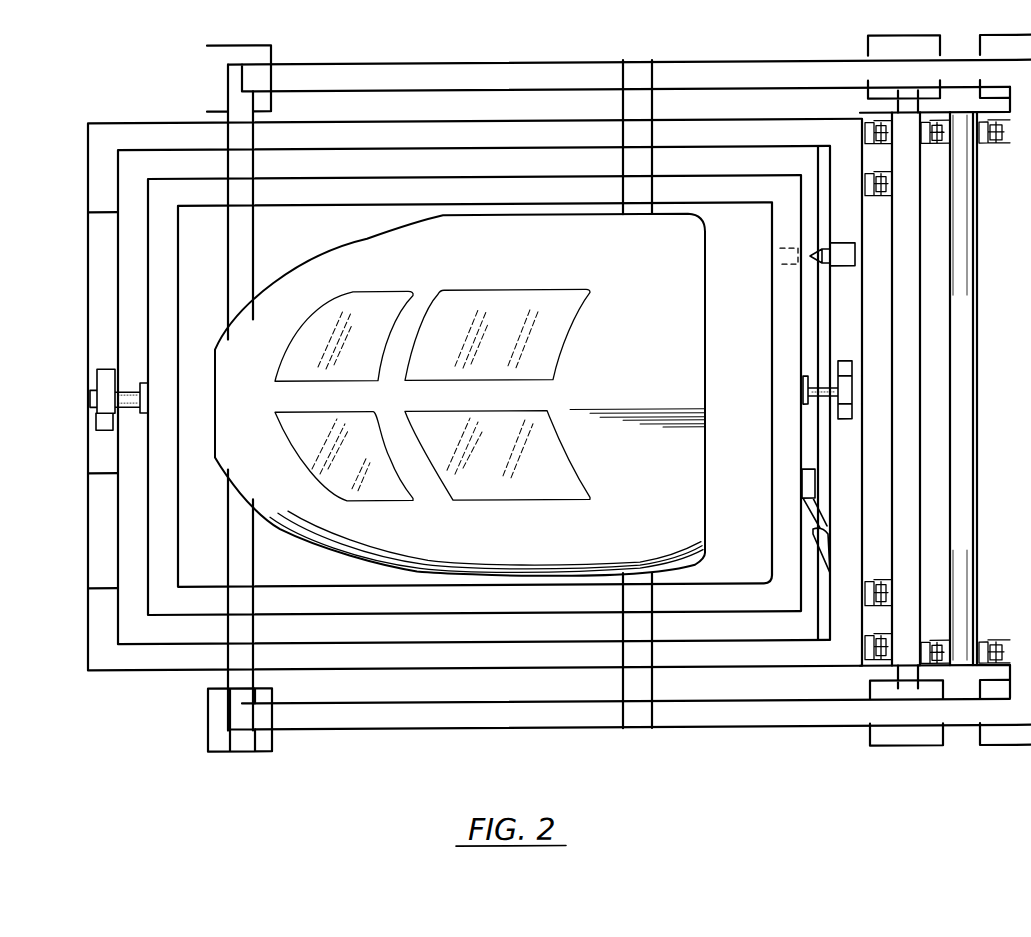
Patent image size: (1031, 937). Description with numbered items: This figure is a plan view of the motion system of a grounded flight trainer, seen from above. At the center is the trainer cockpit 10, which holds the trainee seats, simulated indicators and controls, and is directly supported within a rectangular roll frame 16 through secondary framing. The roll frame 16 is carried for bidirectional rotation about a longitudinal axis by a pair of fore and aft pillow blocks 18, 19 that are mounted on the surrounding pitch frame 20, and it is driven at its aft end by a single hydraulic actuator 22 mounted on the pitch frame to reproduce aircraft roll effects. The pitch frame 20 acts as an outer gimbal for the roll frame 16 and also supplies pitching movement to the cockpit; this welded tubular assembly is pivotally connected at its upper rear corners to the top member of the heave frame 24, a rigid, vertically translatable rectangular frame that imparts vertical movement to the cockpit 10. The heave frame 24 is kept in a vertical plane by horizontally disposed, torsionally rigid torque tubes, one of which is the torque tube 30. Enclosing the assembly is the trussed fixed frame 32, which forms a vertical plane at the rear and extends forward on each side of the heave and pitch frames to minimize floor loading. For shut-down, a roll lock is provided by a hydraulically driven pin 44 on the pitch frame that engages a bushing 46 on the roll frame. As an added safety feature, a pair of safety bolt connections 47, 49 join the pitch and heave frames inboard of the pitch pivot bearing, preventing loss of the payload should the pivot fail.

The trainer cockpit 10 is at (640, 397).
The roll frame 16 is at (372, 606).
The pillow block 18 is at (100, 395).
The pillow block 19 is at (846, 388).
The pitch frame 20 is at (350, 148).
The hydraulic actuator 22 is at (815, 535).
The heave frame 24 is at (908, 212).
The torque tube 30 is at (962, 445).
The fixed frame 32 is at (778, 60).
The hydraulically driven pin 44 is at (822, 267).
The bushing 46 is at (780, 260).
The safety bolt connection 47 is at (862, 618).
The safety bolt connection 49 is at (862, 182).